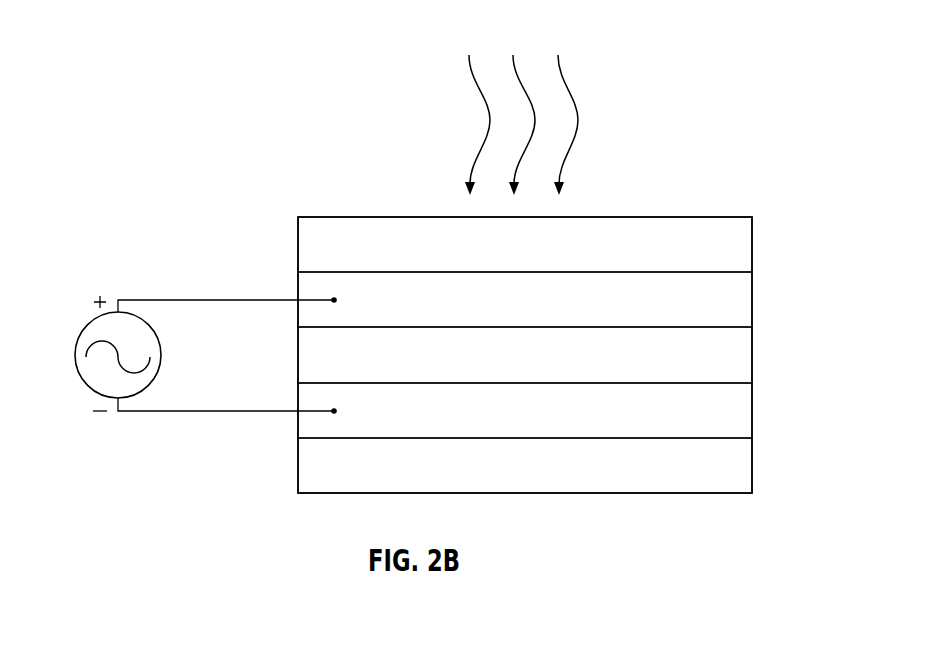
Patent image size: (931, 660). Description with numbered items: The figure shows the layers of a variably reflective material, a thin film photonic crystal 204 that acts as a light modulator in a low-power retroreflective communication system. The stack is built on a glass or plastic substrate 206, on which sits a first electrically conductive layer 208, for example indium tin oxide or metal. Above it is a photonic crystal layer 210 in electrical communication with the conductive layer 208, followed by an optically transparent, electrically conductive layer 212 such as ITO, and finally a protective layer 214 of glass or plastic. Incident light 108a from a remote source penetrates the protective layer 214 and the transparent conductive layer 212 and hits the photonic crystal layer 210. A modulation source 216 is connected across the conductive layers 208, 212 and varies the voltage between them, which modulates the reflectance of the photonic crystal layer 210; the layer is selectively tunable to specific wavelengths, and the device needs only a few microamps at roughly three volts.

The thin film photonic crystal 204 is at (162, 66).
The protective layer 214 is at (753, 245).
The optically transparent, electrically conductive layer 212 is at (753, 300).
The photonic crystal layer 210 is at (753, 355).
The first electrically conductive layer 208 is at (753, 410).
The substrate 206 is at (753, 466).
The modulation source 216 is at (92, 322).
The incident light 108a is at (578, 121).